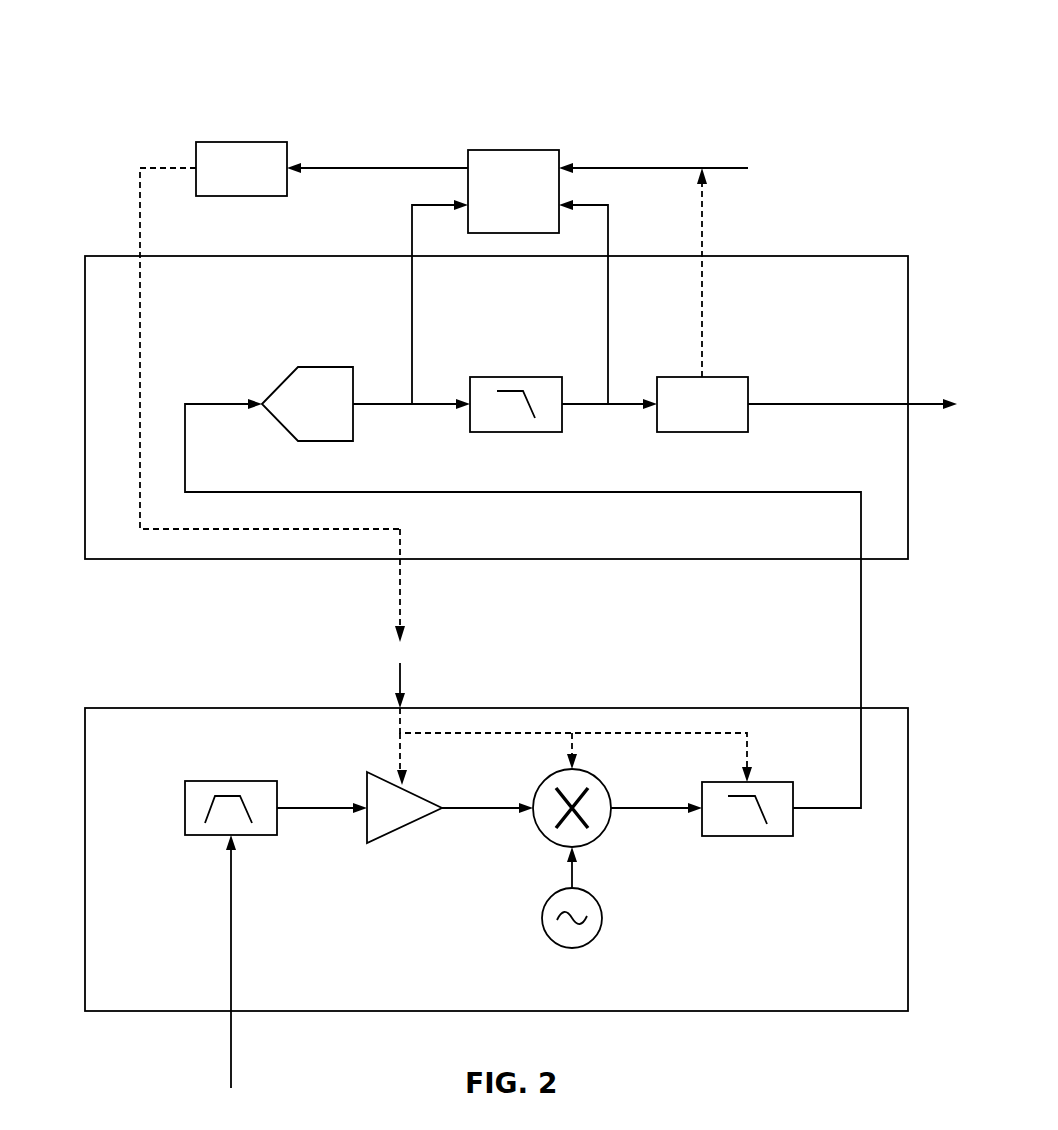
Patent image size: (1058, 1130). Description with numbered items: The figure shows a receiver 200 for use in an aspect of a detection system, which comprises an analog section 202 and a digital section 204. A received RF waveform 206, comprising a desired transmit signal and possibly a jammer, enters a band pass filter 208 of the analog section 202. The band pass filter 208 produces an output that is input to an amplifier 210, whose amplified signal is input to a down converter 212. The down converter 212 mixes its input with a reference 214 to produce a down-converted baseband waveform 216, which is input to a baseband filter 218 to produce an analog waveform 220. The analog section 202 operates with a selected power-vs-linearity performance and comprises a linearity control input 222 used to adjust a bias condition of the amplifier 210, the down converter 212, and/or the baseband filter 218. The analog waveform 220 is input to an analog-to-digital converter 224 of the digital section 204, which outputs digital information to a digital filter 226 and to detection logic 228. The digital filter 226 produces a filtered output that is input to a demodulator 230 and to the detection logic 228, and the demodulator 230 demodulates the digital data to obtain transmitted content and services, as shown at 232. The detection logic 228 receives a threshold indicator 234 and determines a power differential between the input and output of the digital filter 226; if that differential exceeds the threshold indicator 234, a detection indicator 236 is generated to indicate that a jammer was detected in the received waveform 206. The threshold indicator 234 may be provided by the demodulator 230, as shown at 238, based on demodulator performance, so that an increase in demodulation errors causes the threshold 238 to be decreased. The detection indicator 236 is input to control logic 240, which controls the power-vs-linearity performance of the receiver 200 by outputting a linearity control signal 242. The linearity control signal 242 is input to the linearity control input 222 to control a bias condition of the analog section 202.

The receiver 200 is at (795, 62).
The analog section 202 is at (170, 708).
The digital section 204 is at (178, 559).
The received RF waveform 206 is at (231, 1035).
The band pass filter 208 is at (203, 836).
The amplifier 210 is at (380, 843).
The down converter 212 is at (550, 840).
The reference 214 is at (596, 940).
The baseband waveform 216 is at (625, 810).
The baseband filter 218 is at (760, 836).
The analog waveform 220 is at (861, 650).
The linearity control input 222 is at (403, 680).
The analog-to-digital converter 224 is at (310, 367).
The digital filter 226 is at (522, 380).
The detection logic 228 is at (513, 150).
The demodulator 230 is at (733, 377).
The transmitted content and services 232 is at (803, 404).
The threshold indicator 234 is at (728, 168).
The detection indicator 236 is at (392, 162).
The threshold indicator from demodulator 238 is at (702, 226).
The control logic 240 is at (240, 142).
The linearity control signal 242 is at (139, 218).